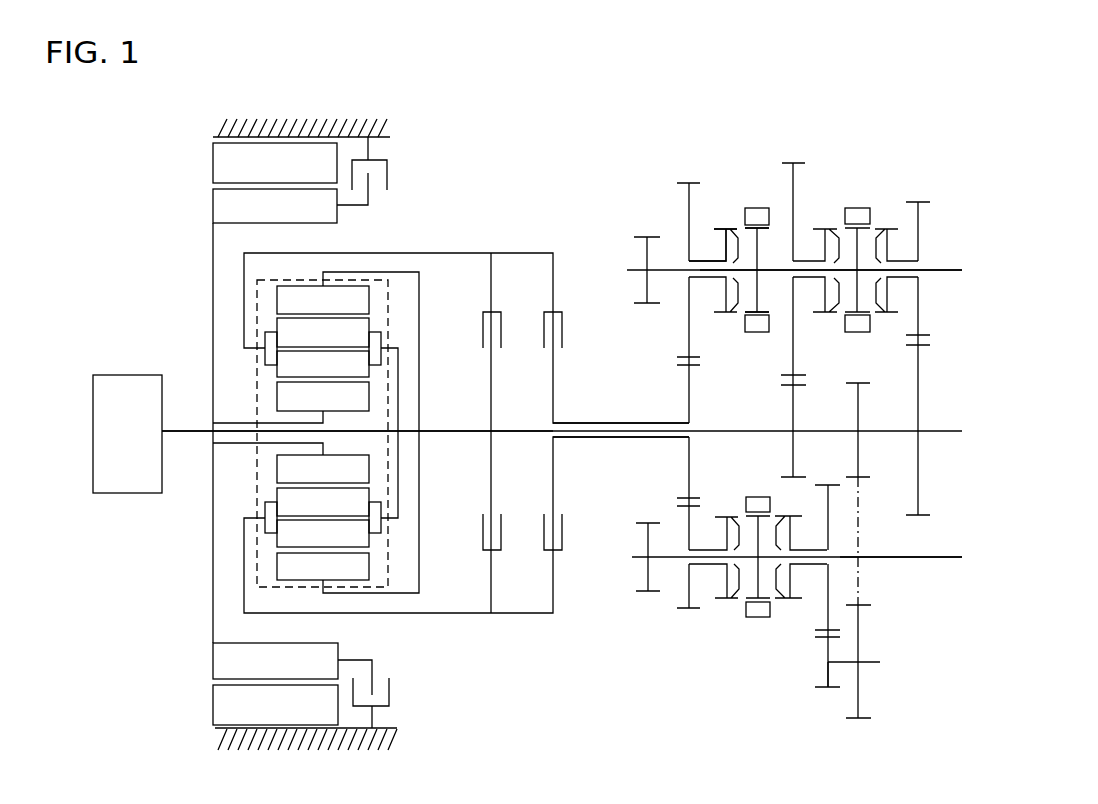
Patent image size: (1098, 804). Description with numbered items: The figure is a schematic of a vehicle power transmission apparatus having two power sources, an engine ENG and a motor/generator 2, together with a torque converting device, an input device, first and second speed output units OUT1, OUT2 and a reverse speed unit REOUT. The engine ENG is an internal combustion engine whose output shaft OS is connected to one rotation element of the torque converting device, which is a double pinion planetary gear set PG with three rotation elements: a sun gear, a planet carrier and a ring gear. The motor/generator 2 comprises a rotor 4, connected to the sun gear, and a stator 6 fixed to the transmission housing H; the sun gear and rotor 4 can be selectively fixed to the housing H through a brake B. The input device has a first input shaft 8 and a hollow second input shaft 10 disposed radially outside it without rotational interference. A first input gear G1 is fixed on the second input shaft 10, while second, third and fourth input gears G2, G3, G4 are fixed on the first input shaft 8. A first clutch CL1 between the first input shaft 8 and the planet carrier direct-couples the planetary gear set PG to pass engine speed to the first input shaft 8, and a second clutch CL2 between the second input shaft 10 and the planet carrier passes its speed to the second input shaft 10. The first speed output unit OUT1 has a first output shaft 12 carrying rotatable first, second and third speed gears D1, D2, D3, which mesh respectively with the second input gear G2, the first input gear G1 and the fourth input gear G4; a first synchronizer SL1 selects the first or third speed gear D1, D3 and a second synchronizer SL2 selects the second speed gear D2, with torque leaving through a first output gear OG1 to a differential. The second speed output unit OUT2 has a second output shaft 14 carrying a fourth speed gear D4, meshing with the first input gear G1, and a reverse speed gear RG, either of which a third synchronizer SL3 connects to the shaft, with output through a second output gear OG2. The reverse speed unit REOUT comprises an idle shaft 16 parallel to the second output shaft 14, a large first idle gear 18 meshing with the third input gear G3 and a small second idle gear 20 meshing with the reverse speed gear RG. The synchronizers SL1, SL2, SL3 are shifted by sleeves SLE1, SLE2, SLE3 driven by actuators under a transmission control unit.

The transmission housing H is at (305, 137).
The brake B is at (375, 432).
The motor/generator 2 is at (236, 434).
The stator 6 is at (213, 166).
The rotor 4 is at (251, 206).
The engine ENG is at (527, 434).
The output shaft OS is at (180, 431).
The planetary gear set PG is at (401, 433).
The first clutch CL1 is at (473, 433).
The second clutch CL2 is at (573, 431).
The second input shaft 10 is at (613, 423).
The first input shaft 8 is at (577, 437).
The first speed output unit OUT1 is at (831, 254).
The first output shaft 12 is at (835, 297).
The first output gear OG1 is at (645, 253).
The second speed gear D2 is at (689, 210).
The first input gear G1 is at (689, 407).
The second sleeve SLE2 is at (757, 200).
The second synchronizer SL2 is at (724, 170).
The first speed gear D1 is at (793, 205).
The second input gear G2 is at (793, 410).
The first sleeve SLE1 is at (867, 200).
The first synchronizer SL1 is at (898, 185).
The third speed gear D3 is at (920, 238).
The fourth input gear G4 is at (918, 380).
The third input gear G3 is at (858, 410).
The second speed output unit OUT2 is at (835, 508).
The second output shaft 14 is at (955, 559).
The second output gear OG2 is at (647, 573).
The fourth speed gear D4 is at (685, 603).
The third sleeve SLE3 is at (752, 628).
The third synchronizer SL3 is at (778, 690).
The reverse speed gear RG is at (827, 603).
The reverse speed unit REOUT is at (928, 631).
The idle shaft 16 is at (874, 662).
The first idle gear 18 is at (862, 700).
The second idle gear 20 is at (826, 678).